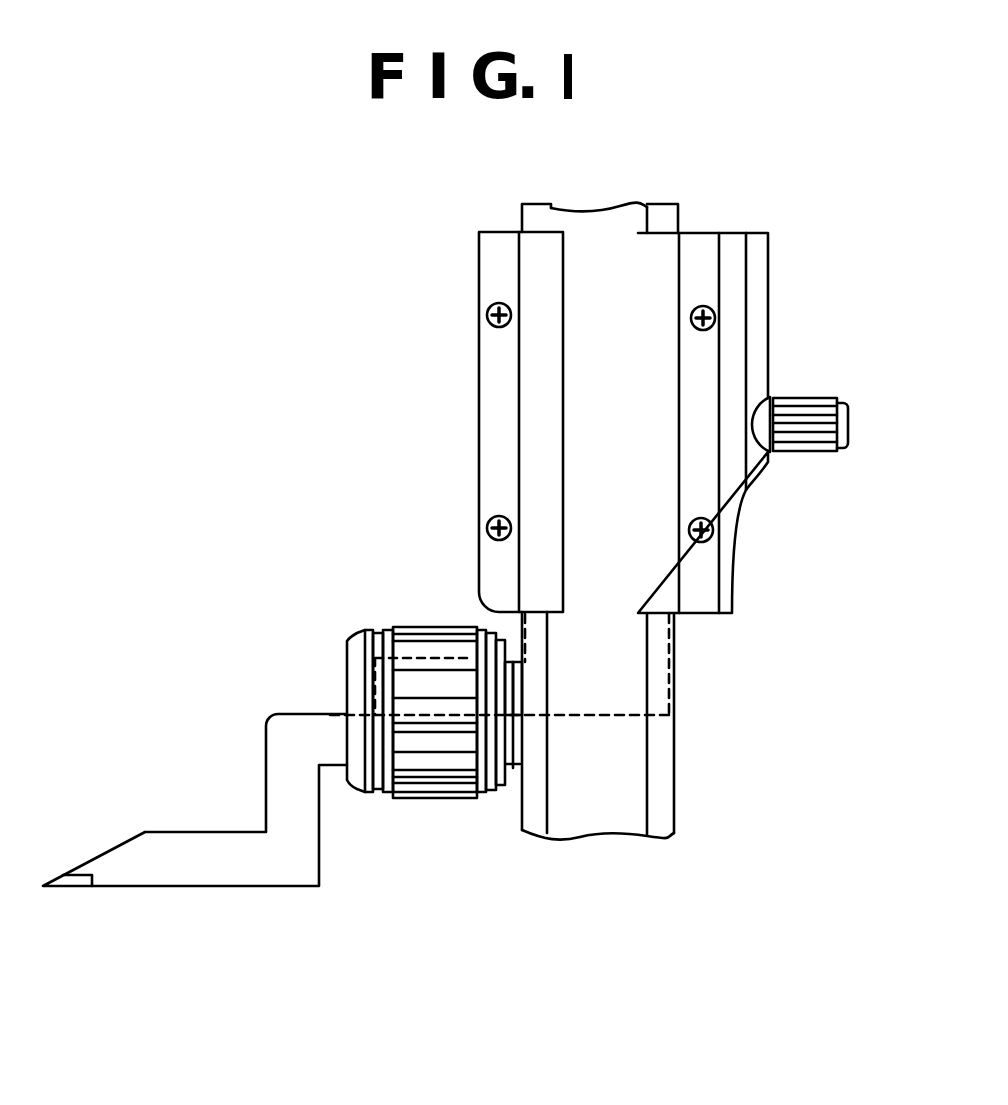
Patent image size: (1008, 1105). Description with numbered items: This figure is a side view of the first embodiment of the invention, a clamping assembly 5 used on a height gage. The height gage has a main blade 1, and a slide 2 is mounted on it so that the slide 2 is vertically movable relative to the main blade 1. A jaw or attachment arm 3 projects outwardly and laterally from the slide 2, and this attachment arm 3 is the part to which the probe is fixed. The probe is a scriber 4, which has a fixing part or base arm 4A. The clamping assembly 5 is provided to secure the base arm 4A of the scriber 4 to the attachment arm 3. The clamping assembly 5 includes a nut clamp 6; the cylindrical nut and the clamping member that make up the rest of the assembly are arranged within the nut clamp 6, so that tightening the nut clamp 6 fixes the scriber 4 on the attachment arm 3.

The main blade 1 is at (670, 766).
The slide 2 is at (727, 561).
The attachment arm 3 is at (436, 660).
The scriber 4 is at (312, 833).
The base arm 4A is at (515, 762).
The clamping assembly 5 is at (409, 698).
The nut clamp 6 is at (347, 648).